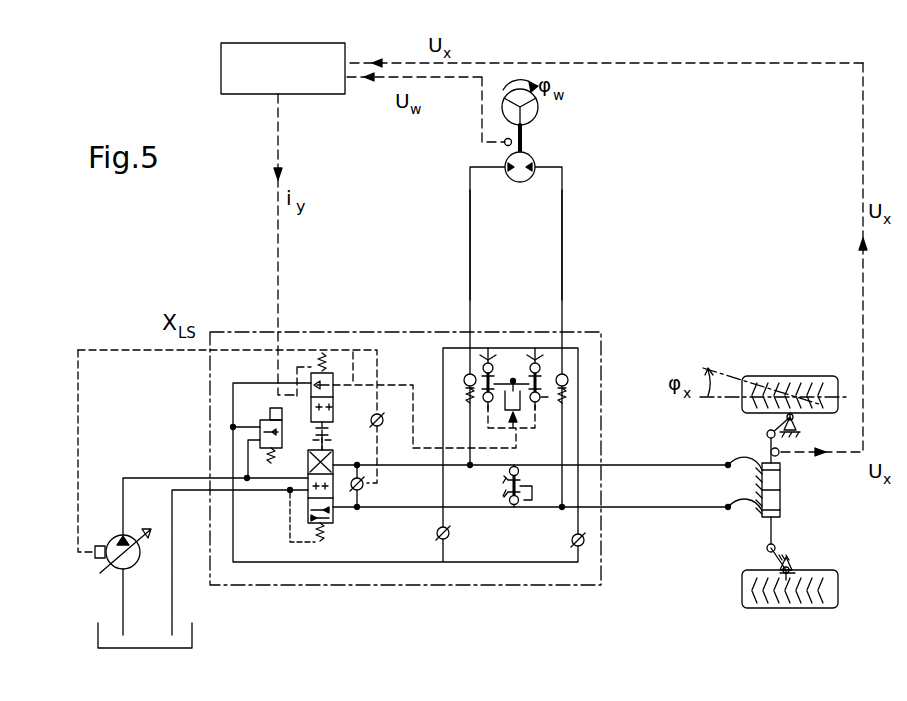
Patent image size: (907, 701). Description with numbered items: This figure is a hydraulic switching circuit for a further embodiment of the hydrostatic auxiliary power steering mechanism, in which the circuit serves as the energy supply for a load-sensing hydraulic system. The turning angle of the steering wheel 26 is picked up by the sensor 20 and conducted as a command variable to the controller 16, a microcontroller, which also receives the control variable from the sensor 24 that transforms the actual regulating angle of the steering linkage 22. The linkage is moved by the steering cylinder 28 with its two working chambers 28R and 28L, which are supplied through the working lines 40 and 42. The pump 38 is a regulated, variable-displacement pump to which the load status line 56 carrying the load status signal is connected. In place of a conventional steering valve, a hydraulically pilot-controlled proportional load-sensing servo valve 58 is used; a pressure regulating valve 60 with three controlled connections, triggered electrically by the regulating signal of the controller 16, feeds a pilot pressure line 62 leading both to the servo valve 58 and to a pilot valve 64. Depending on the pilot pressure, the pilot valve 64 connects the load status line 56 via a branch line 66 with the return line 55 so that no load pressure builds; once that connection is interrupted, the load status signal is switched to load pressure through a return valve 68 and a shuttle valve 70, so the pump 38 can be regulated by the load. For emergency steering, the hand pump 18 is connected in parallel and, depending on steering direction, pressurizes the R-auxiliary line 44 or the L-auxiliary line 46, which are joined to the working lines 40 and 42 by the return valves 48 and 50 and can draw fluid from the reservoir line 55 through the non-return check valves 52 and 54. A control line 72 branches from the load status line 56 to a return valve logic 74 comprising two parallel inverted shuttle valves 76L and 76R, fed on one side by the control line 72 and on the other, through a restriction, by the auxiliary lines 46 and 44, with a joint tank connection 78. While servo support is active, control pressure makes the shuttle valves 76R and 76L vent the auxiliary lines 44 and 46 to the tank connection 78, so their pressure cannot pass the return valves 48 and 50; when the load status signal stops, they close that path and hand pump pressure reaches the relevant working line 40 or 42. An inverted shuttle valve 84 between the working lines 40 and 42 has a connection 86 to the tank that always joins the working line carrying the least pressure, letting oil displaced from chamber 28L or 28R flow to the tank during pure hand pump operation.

The controller 16 is at (244, 90).
The hand pump 18 is at (524, 160).
The sensor 20 is at (504, 143).
The steering linkage 22 is at (778, 548).
The sensor 24 is at (770, 451).
The steering wheel 26 is at (540, 107).
The steering cylinder 28 is at (783, 498).
The left working chamber 28L is at (781, 475).
The right working chamber 28R is at (760, 514).
The regulated pump 38 is at (100, 563).
The working line 40 is at (518, 508).
The L-working line 42 is at (683, 465).
The R-auxiliary line 44 is at (562, 205).
The L-auxiliary line 46 is at (470, 216).
The return valve 48 is at (572, 386).
The return valve 50 is at (468, 375).
The non-return check valve 52 is at (573, 537).
The non-return check valve 54 is at (449, 536).
The tank or reservoir line 55 is at (173, 605).
The load status line 56 is at (120, 346).
The load-sensing servo valve 58 is at (340, 516).
The pressure regulating valve 60 is at (256, 420).
The pilot pressure line 62 is at (304, 445).
The pilot valve 64 is at (306, 408).
The branch line 66 is at (352, 354).
The return valve 68 is at (372, 426).
The shuttle valve 70 is at (365, 490).
The control line 72 is at (404, 350).
The return valve logic 74 is at (513, 378).
The inverted shuttle valve 76L is at (490, 362).
The inverted shuttle valve 76R is at (540, 392).
The tank connection 78 is at (545, 399).
The inverted shuttle valve 84 is at (505, 486).
The connection 86 is at (520, 486).